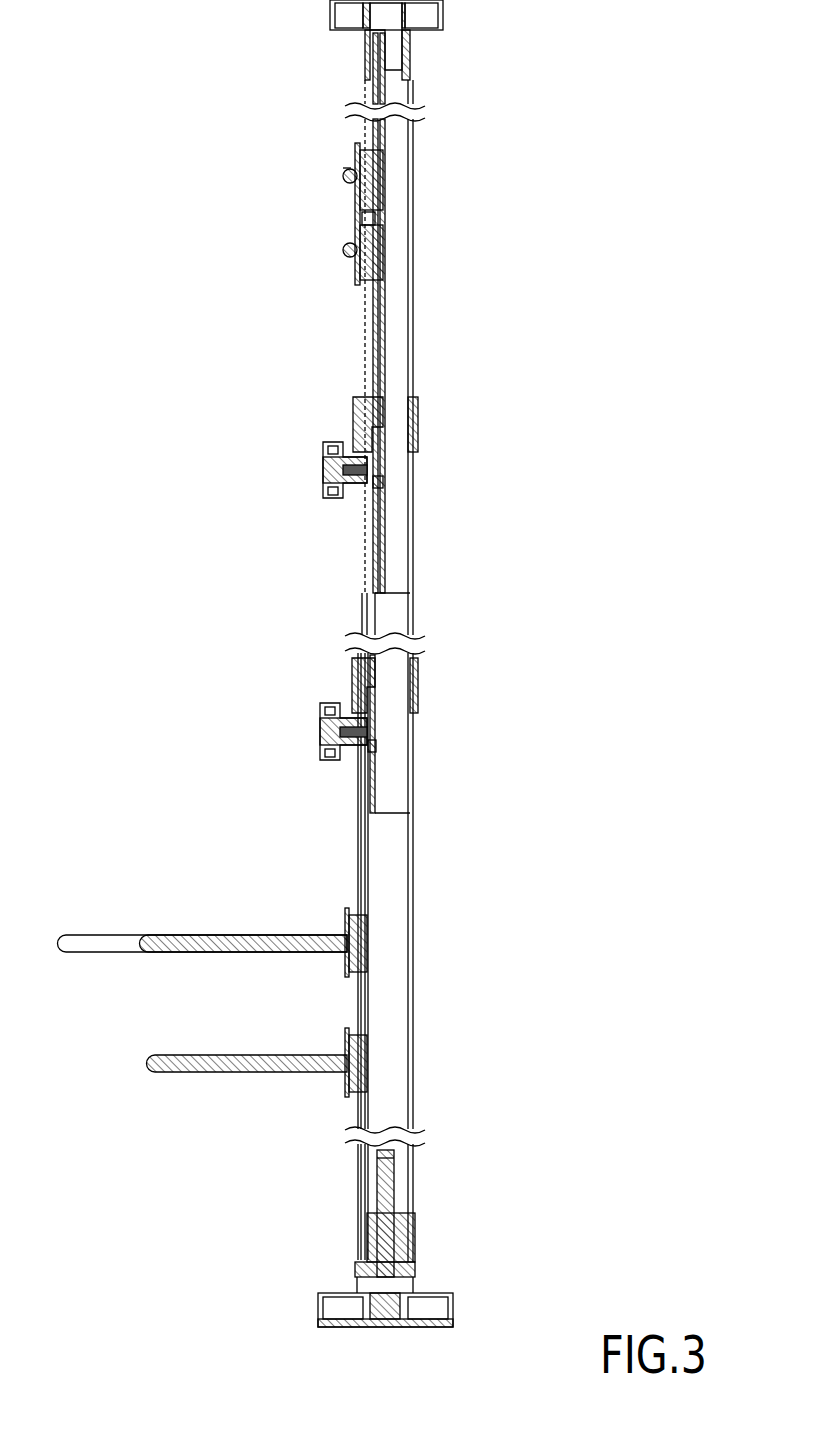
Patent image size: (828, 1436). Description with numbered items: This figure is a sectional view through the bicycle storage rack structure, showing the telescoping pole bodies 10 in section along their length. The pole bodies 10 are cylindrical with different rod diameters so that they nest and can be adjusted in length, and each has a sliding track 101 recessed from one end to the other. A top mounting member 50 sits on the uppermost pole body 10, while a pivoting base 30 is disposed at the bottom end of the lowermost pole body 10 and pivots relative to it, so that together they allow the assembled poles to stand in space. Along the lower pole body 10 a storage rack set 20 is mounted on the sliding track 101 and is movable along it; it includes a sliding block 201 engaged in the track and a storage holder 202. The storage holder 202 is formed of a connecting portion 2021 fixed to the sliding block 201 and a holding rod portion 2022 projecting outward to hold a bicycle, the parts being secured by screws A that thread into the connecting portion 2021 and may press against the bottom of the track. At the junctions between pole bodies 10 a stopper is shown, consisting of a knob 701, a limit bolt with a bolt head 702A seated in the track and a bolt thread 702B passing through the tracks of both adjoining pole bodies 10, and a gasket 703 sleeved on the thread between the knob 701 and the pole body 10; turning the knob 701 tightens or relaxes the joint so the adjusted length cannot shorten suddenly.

The pole body 10 is at (413, 152).
The sliding track 101 is at (358, 343).
The top mounting member 50 is at (448, 5).
The connecting portion 2021 is at (355, 143).
The sliding block 201 is at (386, 175).
The storage holder 202 is at (341, 185).
The screw A is at (348, 168).
The gasket 703 is at (367, 453).
The bolt head 702A is at (383, 468).
The knob 701 is at (327, 470).
The bolt thread 702B is at (367, 482).
The storage rack set 20 is at (330, 917).
The holding rod portion 2022 is at (115, 917).
The pivoting base 30 is at (456, 1293).